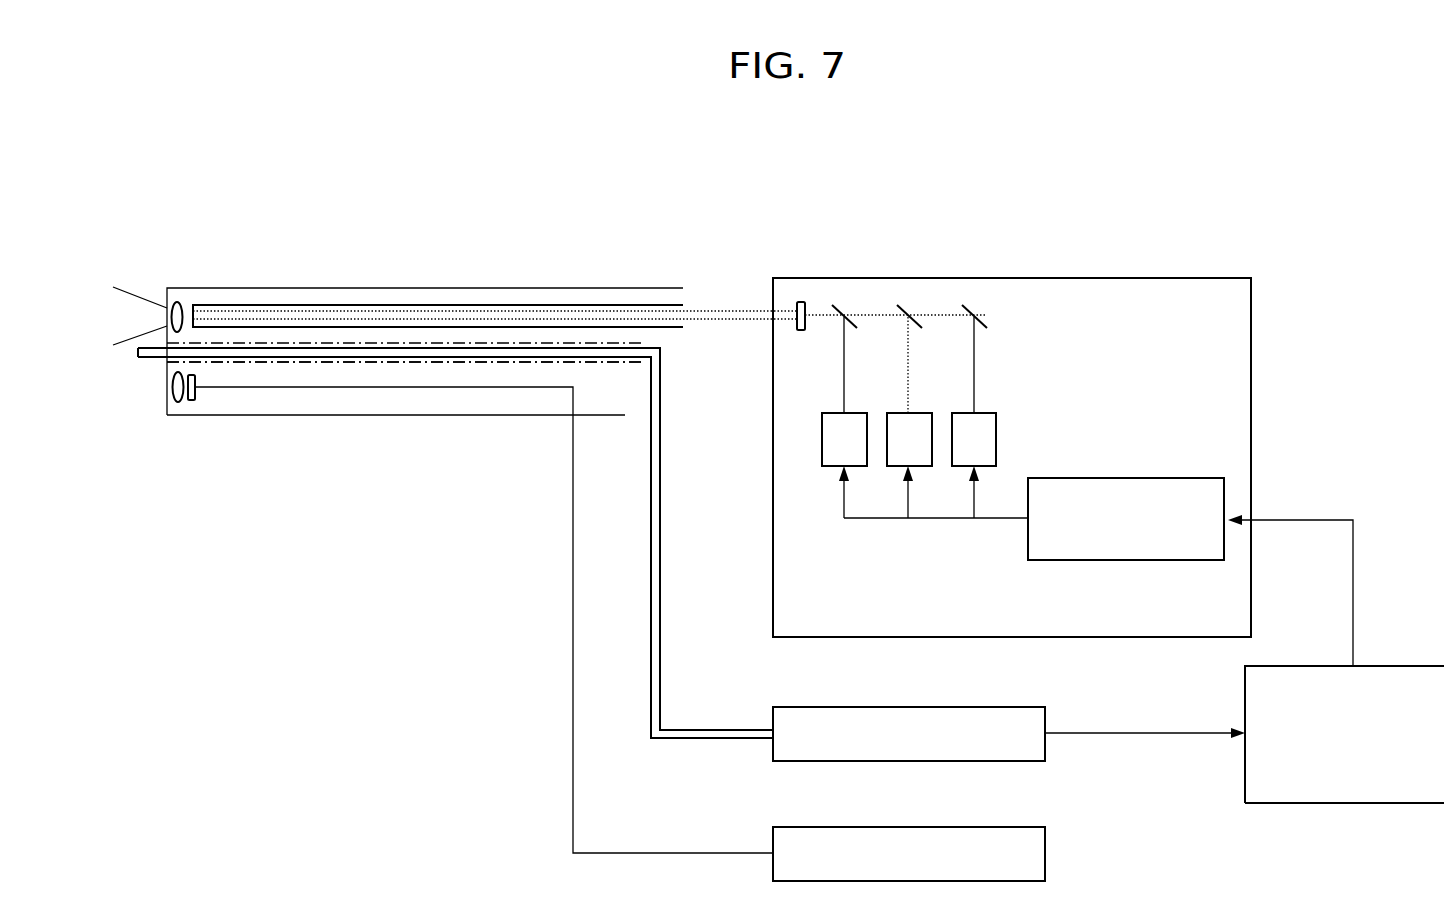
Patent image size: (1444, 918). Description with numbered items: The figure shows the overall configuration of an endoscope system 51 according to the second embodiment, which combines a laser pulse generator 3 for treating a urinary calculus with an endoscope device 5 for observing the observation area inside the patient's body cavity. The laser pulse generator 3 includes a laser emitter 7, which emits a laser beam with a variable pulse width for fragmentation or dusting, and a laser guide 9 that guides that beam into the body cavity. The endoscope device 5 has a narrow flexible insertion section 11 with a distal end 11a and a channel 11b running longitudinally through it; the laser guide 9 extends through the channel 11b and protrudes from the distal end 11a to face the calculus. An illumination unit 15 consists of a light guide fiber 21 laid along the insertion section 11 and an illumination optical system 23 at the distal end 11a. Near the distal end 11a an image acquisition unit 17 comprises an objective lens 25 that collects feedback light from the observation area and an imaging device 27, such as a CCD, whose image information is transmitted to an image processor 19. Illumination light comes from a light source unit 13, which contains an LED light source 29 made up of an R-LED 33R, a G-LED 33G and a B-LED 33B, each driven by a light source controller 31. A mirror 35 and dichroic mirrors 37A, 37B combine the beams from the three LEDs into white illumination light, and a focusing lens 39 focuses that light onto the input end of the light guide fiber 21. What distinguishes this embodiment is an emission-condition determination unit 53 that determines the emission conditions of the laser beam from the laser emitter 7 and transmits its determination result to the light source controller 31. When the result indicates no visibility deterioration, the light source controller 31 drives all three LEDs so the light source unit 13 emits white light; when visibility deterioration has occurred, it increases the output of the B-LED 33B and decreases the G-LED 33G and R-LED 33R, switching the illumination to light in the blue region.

The endoscope system 51 is at (200, 140).
The endoscope device 5 is at (1276, 236).
The laser pulse generator 3 is at (645, 749).
The insertion section 11 is at (437, 288).
The distal end 11a is at (165, 383).
The channel 11b is at (357, 364).
The illumination unit 15 is at (330, 216).
The light guide fiber 21 is at (305, 305).
The illumination optical system 23 is at (177, 301).
The image acquisition unit 17 is at (133, 485).
The objective lens 25 is at (177, 403).
The imaging device 27 is at (190, 403).
The laser guide 9 is at (662, 486).
The light source unit 13 is at (1108, 278).
The focusing lens 39 is at (800, 302).
The dichroic mirror 37B is at (841, 305).
The dichroic mirror 37A is at (900, 305).
The mirror 35 is at (965, 305).
The R-LED 33R is at (826, 468).
The G-LED 33G is at (892, 468).
The B-LED 33B is at (957, 468).
The LED light source 29 is at (790, 564).
The light source controller 31 is at (1125, 478).
The emission-condition determination unit 53 is at (1390, 666).
The laser emitter 7 is at (1048, 745).
The image processor 19 is at (1048, 850).